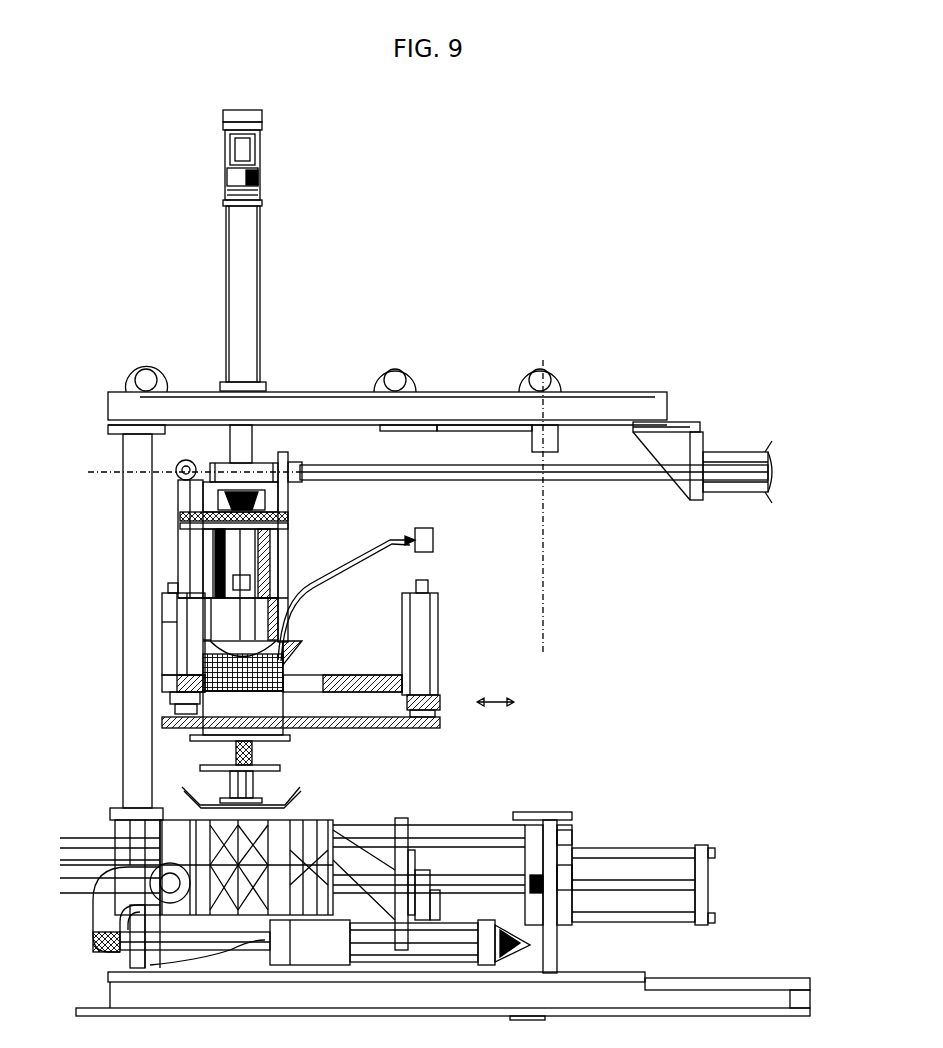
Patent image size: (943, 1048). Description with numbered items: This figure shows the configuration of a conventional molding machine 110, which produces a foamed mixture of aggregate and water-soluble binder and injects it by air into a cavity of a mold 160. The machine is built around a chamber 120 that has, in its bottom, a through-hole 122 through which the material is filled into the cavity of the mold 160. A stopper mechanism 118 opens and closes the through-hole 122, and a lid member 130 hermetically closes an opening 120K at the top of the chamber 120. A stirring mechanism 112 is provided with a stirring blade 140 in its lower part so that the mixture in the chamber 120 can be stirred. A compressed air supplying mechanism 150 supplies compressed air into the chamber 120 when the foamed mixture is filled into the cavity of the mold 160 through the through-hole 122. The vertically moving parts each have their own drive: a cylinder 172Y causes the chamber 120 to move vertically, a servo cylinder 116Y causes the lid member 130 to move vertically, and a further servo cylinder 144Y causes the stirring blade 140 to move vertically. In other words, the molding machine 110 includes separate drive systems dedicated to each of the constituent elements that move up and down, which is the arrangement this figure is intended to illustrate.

The molding machine 110 is at (596, 288).
The servo cylinder 116Y is at (273, 255).
The stopper mechanism 118 is at (165, 772).
The stirring mechanism 112 is at (275, 575).
The servo cylinder 144Y is at (292, 568).
The compressed air supplying mechanism 150 is at (440, 527).
The cylinder 172Y is at (165, 635).
The stirring blade 140 is at (162, 698).
The opening 120K is at (203, 628).
The lid member 130 is at (286, 655).
The chamber 120 is at (292, 704).
The through-hole 122 is at (236, 752).
The mold 160 is at (300, 808).